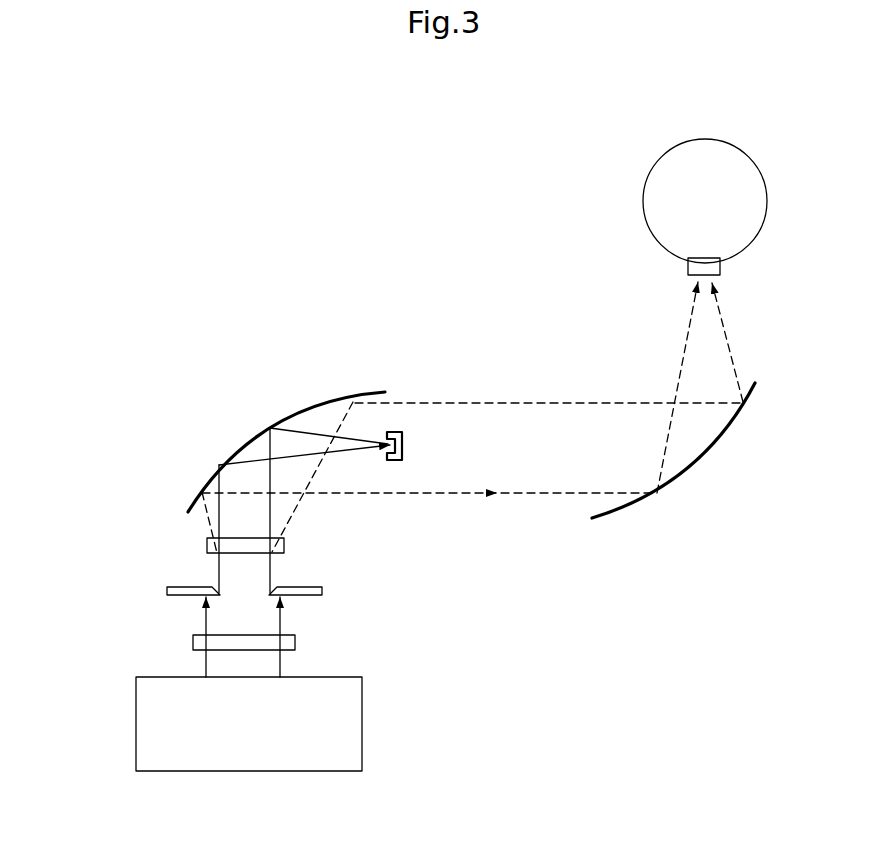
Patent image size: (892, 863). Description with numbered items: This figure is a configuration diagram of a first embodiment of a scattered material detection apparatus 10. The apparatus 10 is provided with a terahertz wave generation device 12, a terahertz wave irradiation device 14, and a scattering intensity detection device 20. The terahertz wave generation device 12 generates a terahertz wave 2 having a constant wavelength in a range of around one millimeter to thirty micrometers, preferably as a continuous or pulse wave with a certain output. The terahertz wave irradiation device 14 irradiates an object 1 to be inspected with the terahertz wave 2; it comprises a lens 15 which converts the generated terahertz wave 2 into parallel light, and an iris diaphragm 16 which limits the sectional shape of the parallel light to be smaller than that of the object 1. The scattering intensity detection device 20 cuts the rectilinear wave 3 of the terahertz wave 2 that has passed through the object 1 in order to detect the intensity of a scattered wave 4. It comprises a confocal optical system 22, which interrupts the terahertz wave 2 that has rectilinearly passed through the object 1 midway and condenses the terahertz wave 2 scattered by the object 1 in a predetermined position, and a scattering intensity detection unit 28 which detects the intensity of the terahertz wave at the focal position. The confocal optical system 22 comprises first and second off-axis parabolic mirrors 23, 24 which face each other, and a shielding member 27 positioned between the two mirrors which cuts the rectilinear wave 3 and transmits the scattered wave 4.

The object to be inspected 1 is at (284, 545).
The terahertz wave 2 is at (265, 667).
The rectilinear wave 3 is at (343, 452).
The scattered wave 4 is at (492, 403).
The scattered material detection apparatus 10 is at (242, 262).
The terahertz wave generation device 12 is at (258, 746).
The terahertz wave irradiation device 14 is at (148, 578).
The lens 15 is at (202, 645).
The iris diaphragm 16 is at (190, 588).
The scattering intensity detection device 20 is at (348, 307).
The confocal optical system 22 is at (343, 388).
The first off-axis parabolic mirror 23 is at (248, 435).
The second off-axis parabolic mirror 24 is at (705, 466).
The shielding member 27 is at (402, 447).
The scattering intensity detection unit 28 is at (652, 197).